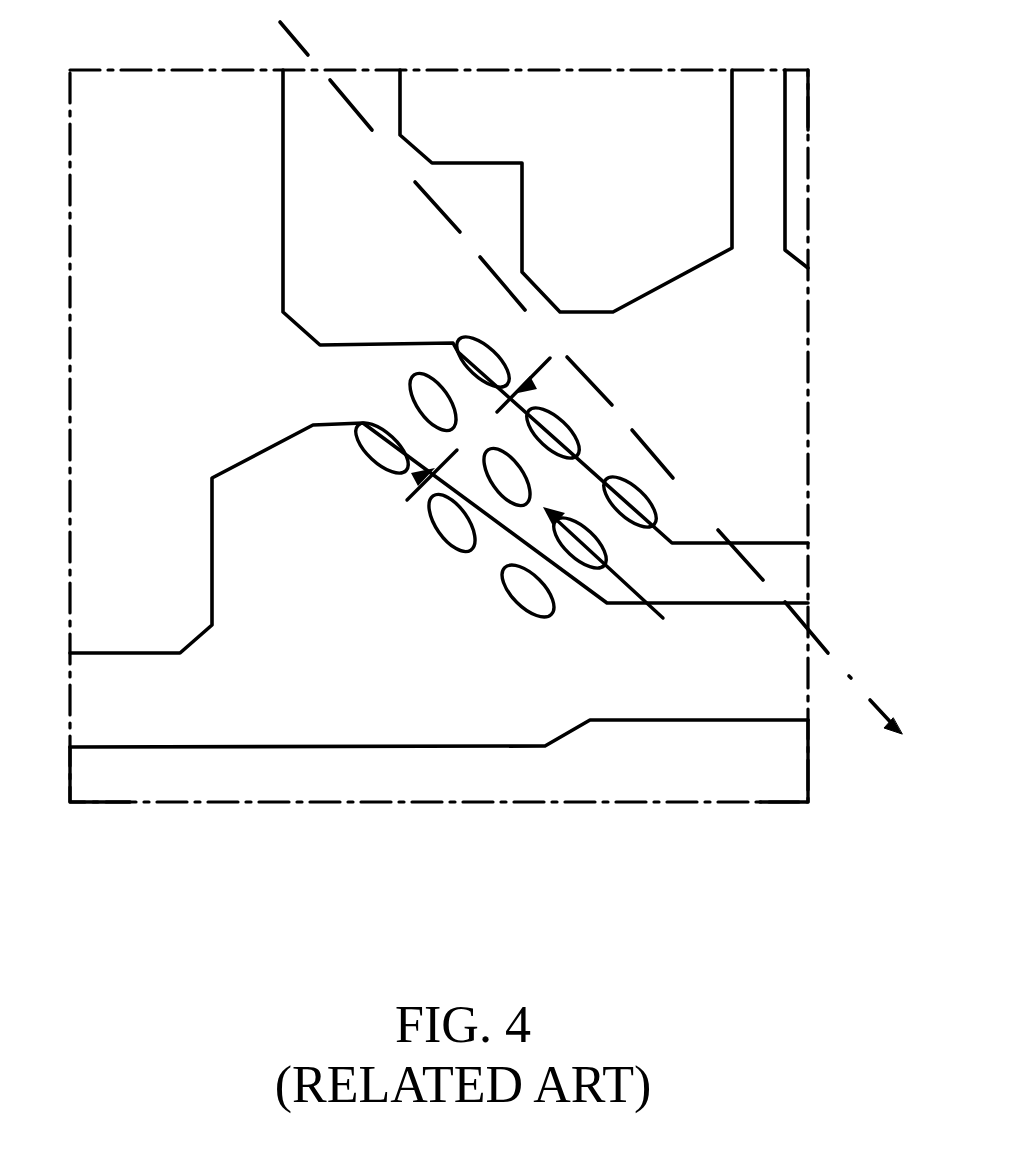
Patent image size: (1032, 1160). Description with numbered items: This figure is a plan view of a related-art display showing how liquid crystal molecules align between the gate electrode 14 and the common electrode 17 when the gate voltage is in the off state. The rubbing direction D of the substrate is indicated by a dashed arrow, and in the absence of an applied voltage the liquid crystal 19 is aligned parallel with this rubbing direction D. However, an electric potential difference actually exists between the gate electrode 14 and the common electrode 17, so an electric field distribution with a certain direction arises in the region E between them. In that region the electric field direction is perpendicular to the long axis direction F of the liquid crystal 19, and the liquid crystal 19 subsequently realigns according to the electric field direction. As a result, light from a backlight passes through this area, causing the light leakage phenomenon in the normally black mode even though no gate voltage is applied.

The gate electrode 14 is at (283, 440).
The common electrode 17 is at (800, 266).
The liquid crystal 19 is at (513, 607).
The rubbing direction D is at (442, 212).
The region between gate electrode and common electrode E is at (506, 453).
The long axis direction of liquid crystal F is at (660, 613).